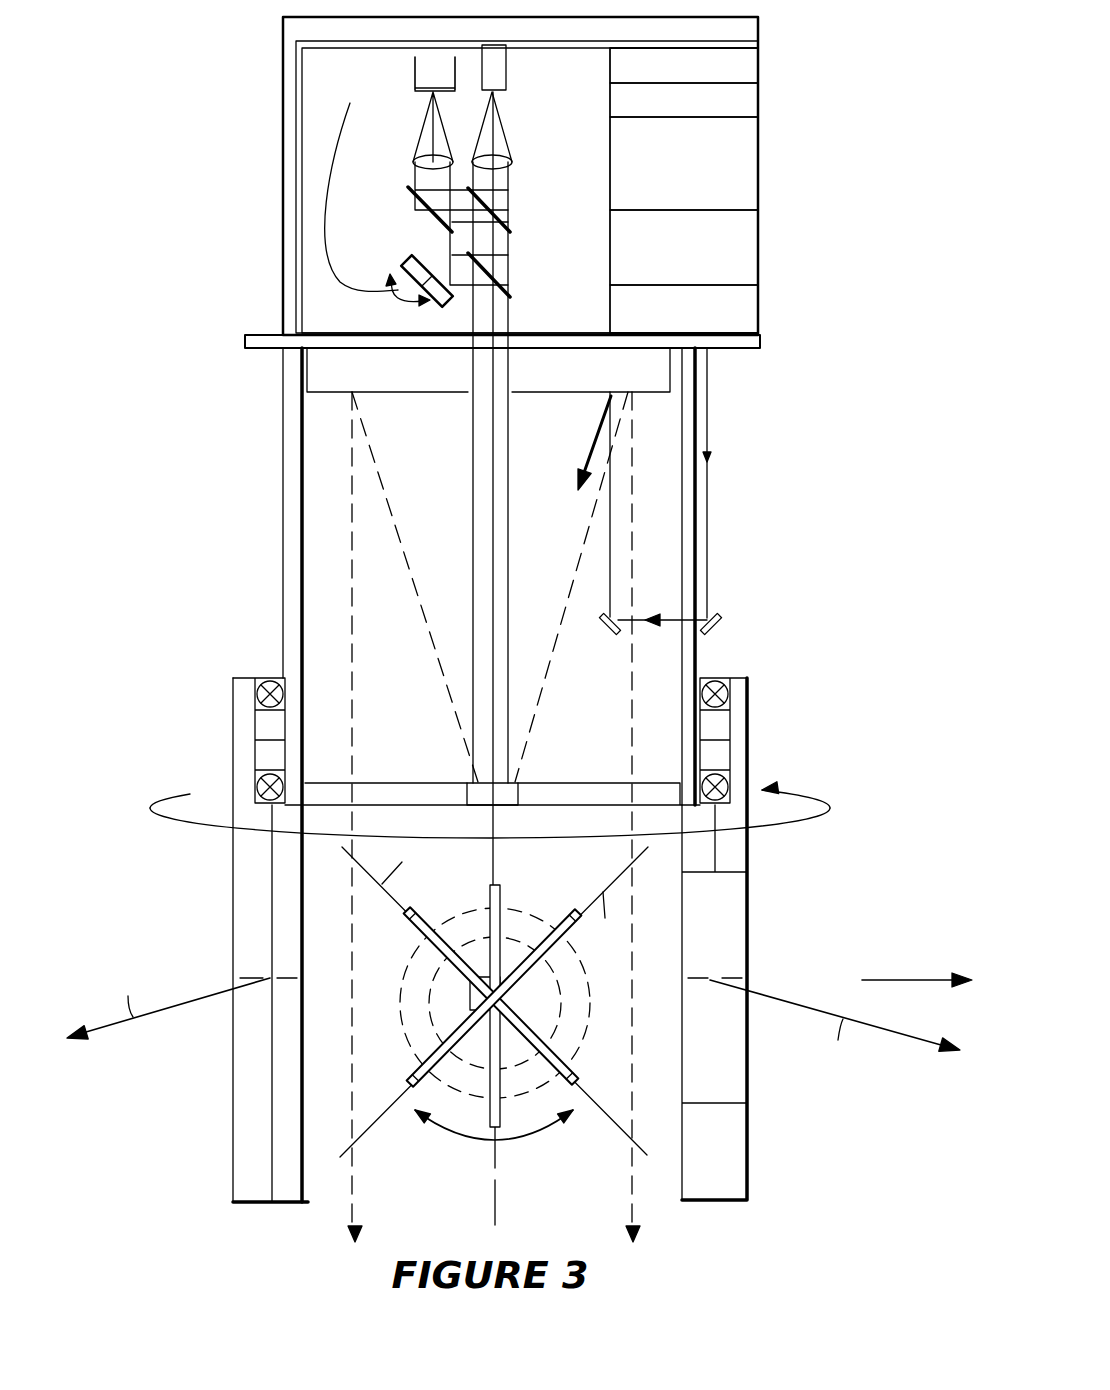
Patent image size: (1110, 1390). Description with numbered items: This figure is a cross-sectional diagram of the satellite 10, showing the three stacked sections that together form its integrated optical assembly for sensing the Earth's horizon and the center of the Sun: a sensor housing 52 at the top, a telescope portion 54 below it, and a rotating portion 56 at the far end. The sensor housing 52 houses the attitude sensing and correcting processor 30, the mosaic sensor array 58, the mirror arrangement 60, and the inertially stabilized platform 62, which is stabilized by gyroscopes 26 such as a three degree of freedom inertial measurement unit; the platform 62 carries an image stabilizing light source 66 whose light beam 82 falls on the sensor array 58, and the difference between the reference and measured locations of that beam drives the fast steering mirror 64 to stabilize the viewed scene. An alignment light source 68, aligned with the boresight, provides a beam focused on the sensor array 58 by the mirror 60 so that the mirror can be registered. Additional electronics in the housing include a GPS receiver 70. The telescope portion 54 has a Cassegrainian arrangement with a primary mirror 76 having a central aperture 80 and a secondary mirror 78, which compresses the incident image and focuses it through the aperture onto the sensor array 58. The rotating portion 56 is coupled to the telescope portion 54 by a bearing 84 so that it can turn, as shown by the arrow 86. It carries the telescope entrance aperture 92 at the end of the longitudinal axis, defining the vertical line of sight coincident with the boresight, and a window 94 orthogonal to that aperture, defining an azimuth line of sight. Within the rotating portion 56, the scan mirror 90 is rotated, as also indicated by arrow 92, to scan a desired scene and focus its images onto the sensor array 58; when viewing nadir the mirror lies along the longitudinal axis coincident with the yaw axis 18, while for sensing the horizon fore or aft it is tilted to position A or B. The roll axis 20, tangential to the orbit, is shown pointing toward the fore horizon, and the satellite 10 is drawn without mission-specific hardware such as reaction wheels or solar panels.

The satellite 10 is at (475, 174).
The mosaic sensor array 58 is at (418, 93).
The alignment light source 68 is at (508, 85).
The mirror arrangement 60 is at (530, 223).
The fast steering mirror 64 is at (415, 297).
The GPS receiver 70 is at (748, 70).
The gyroscopes 26 is at (750, 107).
The sensor housing 52 is at (770, 135).
The attitude sensing and correcting processor 30 is at (752, 180).
The inertially stabilized platform 62 is at (752, 250).
The image stabilizing light source 66 is at (748, 315).
The telescope portion 54 is at (283, 492).
The primary mirror 76 is at (408, 393).
The central aperture 80 is at (500, 415).
The light beam 82 is at (648, 612).
The secondary mirror 78 is at (520, 782).
The bearing 84 is at (748, 715).
The arrow 86 is at (830, 800).
The window 94 is at (748, 915).
The rotating portion 56 is at (236, 1088).
The scan mirror 90 is at (567, 915).
The telescope entrance aperture 92 is at (470, 1142).
The roll axis 20 is at (906, 979).
The yaw axis 18 is at (497, 1200).